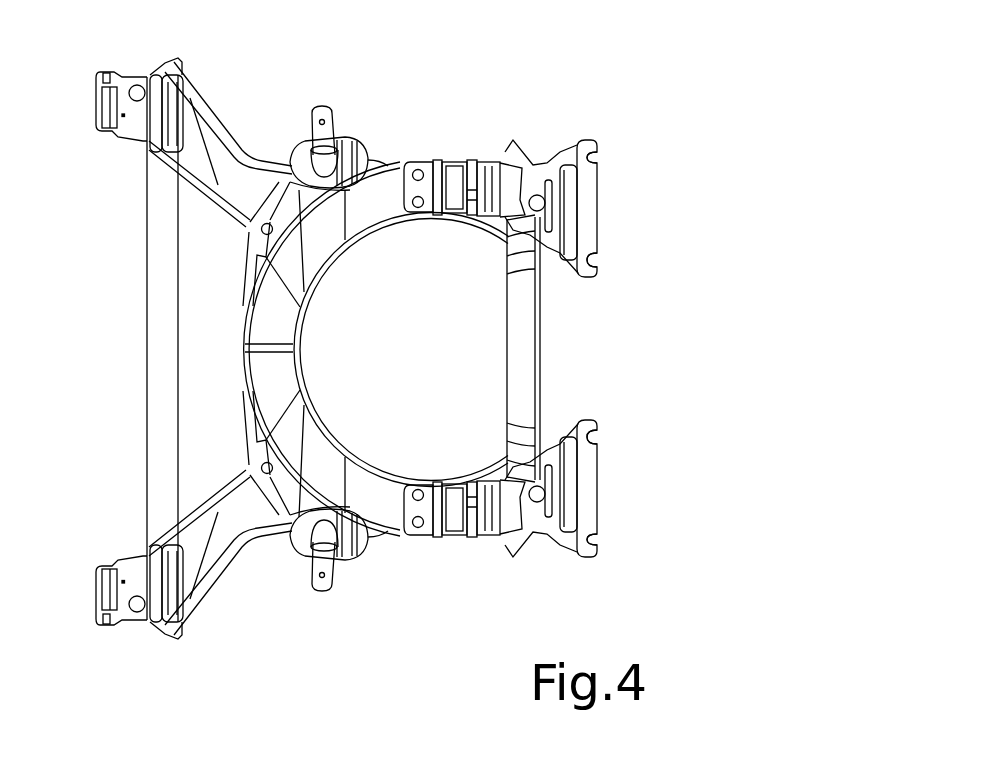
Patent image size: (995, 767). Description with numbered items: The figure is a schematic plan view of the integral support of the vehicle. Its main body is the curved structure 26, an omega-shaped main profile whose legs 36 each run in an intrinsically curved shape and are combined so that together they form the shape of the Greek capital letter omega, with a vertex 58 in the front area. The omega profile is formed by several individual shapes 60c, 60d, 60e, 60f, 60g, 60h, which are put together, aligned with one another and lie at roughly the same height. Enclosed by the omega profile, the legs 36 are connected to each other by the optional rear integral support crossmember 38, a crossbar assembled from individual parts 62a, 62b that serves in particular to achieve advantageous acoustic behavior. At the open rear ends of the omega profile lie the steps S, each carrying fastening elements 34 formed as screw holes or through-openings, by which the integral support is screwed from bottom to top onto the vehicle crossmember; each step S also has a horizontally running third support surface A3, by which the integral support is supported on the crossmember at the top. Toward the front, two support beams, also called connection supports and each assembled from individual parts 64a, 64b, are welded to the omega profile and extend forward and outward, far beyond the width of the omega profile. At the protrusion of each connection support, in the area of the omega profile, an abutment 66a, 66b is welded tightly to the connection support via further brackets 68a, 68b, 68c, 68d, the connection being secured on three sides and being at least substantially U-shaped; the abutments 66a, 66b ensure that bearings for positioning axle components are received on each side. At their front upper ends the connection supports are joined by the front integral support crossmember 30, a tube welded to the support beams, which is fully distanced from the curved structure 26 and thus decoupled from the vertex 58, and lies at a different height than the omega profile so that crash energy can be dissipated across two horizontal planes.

The curved structure 26 is at (238, 378).
The front integral support crossmember 30 is at (156, 524).
The fastening elements 34 is at (592, 150).
The legs 36 is at (363, 220).
The rear integral support crossmember 38 is at (522, 388).
The vertex 58 is at (218, 330).
The individual shape 60c is at (394, 527).
The individual shape 60d is at (395, 170).
The individual shape 60e is at (453, 522).
The individual shape 60f is at (455, 172).
The individual shape 60g is at (477, 478).
The individual shape 60h is at (477, 222).
The individual part 62a is at (507, 345).
The individual part 62b is at (540, 370).
The individual part 64a is at (244, 530).
The individual part 64b is at (245, 163).
The abutment 66a is at (343, 565).
The abutment 66b is at (344, 140).
The bracket 68a is at (281, 520).
The bracket 68b is at (283, 178).
The bracket 68c is at (347, 503).
The bracket 68d is at (347, 188).
The step S is at (600, 194).
The third support surface A3 is at (590, 230).